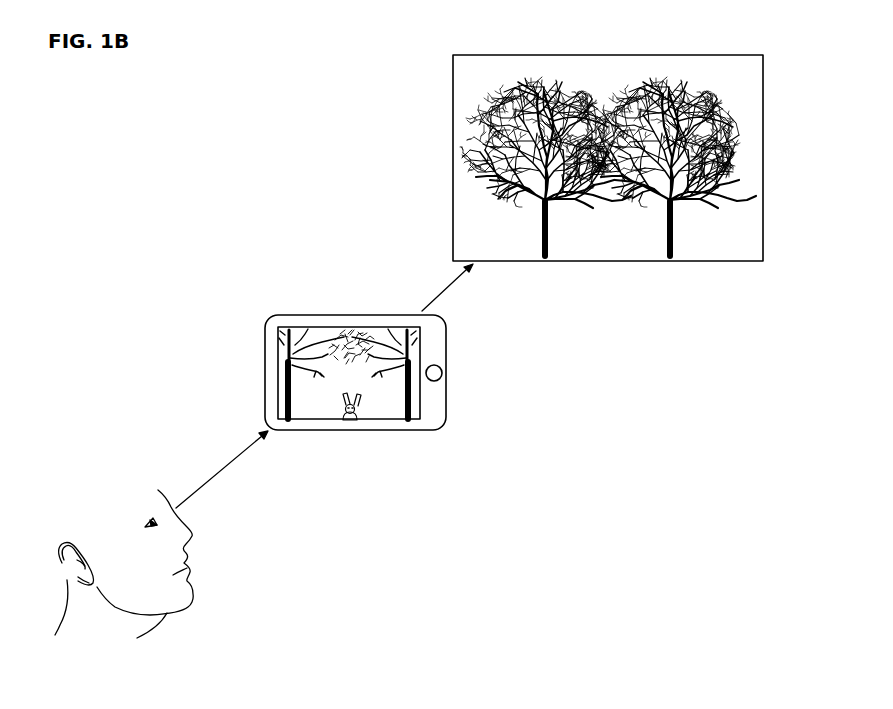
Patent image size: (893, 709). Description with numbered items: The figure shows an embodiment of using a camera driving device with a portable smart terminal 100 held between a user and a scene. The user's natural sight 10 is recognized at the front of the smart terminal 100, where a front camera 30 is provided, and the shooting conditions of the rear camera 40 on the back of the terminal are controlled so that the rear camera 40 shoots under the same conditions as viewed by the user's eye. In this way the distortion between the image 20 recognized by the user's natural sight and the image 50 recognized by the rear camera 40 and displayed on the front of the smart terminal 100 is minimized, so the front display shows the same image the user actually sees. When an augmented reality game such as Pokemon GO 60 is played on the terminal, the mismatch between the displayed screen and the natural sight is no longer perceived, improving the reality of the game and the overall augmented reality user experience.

The user's natural sight 10 is at (182, 522).
The image recognized by the user's natural sight 20 is at (452, 157).
The front camera 30 is at (271, 337).
The rear camera 40 is at (446, 413).
The image recognized by the rear camera 50 is at (421, 350).
The augmented reality game (Pokemon GO) 60 is at (356, 419).
The portable smart terminal 100 is at (357, 354).